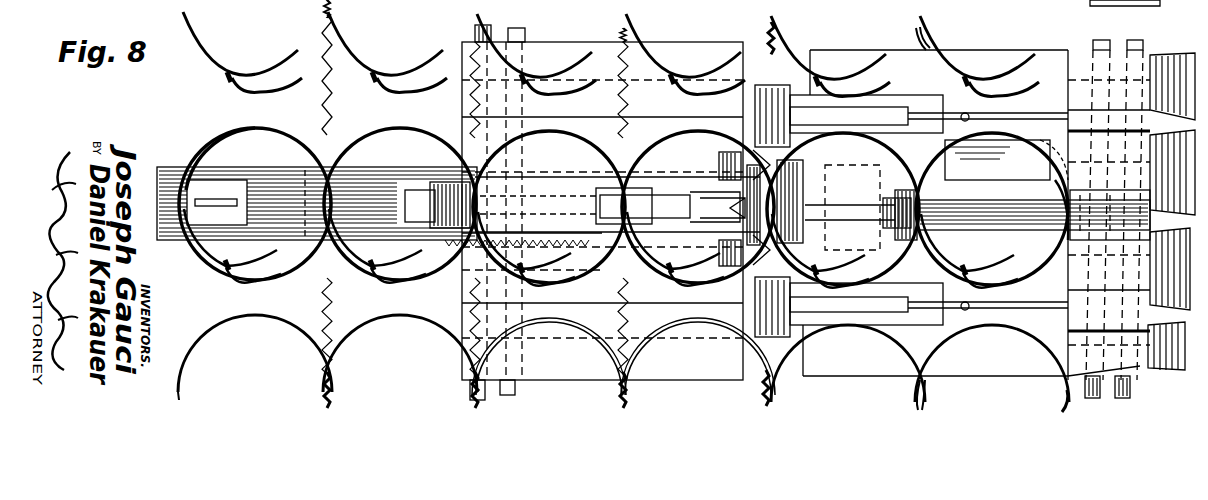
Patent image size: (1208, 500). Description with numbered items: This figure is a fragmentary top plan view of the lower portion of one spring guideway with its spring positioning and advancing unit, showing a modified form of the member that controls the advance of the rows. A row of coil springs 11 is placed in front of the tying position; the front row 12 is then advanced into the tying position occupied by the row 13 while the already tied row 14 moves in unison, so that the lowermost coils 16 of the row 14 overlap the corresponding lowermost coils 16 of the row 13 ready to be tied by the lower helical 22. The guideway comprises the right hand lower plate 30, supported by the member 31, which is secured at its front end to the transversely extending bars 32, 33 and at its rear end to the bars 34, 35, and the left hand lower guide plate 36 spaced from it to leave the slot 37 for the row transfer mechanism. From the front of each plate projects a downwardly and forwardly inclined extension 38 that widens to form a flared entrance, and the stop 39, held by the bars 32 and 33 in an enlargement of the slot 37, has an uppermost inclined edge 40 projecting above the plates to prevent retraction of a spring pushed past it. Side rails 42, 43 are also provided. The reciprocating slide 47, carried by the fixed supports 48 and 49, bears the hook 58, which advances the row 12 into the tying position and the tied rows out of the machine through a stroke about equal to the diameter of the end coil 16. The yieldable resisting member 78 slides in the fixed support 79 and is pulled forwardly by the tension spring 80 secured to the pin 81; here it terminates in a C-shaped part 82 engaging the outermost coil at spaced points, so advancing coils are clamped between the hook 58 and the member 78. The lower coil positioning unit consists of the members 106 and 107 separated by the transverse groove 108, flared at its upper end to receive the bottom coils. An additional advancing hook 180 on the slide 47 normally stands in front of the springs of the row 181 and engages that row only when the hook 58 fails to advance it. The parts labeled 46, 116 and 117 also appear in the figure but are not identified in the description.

The row of coil springs 11 is at (925, 40).
The front row 12 is at (1056, 398).
The added front row 13 is at (900, 365).
The tied row 14 is at (752, 362).
The lowermost coils 16 is at (575, 276).
The helical 22 is at (329, 300).
The lower plate 30 is at (968, 228).
The member 31 is at (778, 70).
The transversely extending bar 32 is at (1103, 40).
The transversely extending bar 33 is at (1137, 40).
The bar 34 is at (488, 24).
The bar 35 is at (526, 30).
The left hand lower guide plate 36 is at (932, 230).
The slot 37 is at (988, 228).
The inclined extension 38 is at (1183, 56).
The stop 39 is at (1064, 191).
The inclined edge 40 is at (1110, 215).
The side rail 42 is at (1046, 128).
The side rail 43 is at (1050, 110).
The collar 46 is at (892, 258).
The slide 47 is at (270, 168).
The fixed support 48 is at (1103, 5).
The fixed support 49 is at (535, 132).
The hook 58 is at (828, 205).
The resisting member 78 is at (645, 203).
The fixed support 79 is at (443, 182).
The tension spring 80 is at (441, 242).
The pin 81 is at (418, 225).
The C-shaped part 82 is at (708, 226).
The positioning member 106 is at (805, 168).
The positioning member 107 is at (718, 160).
The transverse groove 108 is at (806, 280).
The coupling 116 is at (640, 188).
The drive shaft 117 is at (606, 182).
The advancing hook 180 is at (216, 198).
The row 181 is at (212, 136).